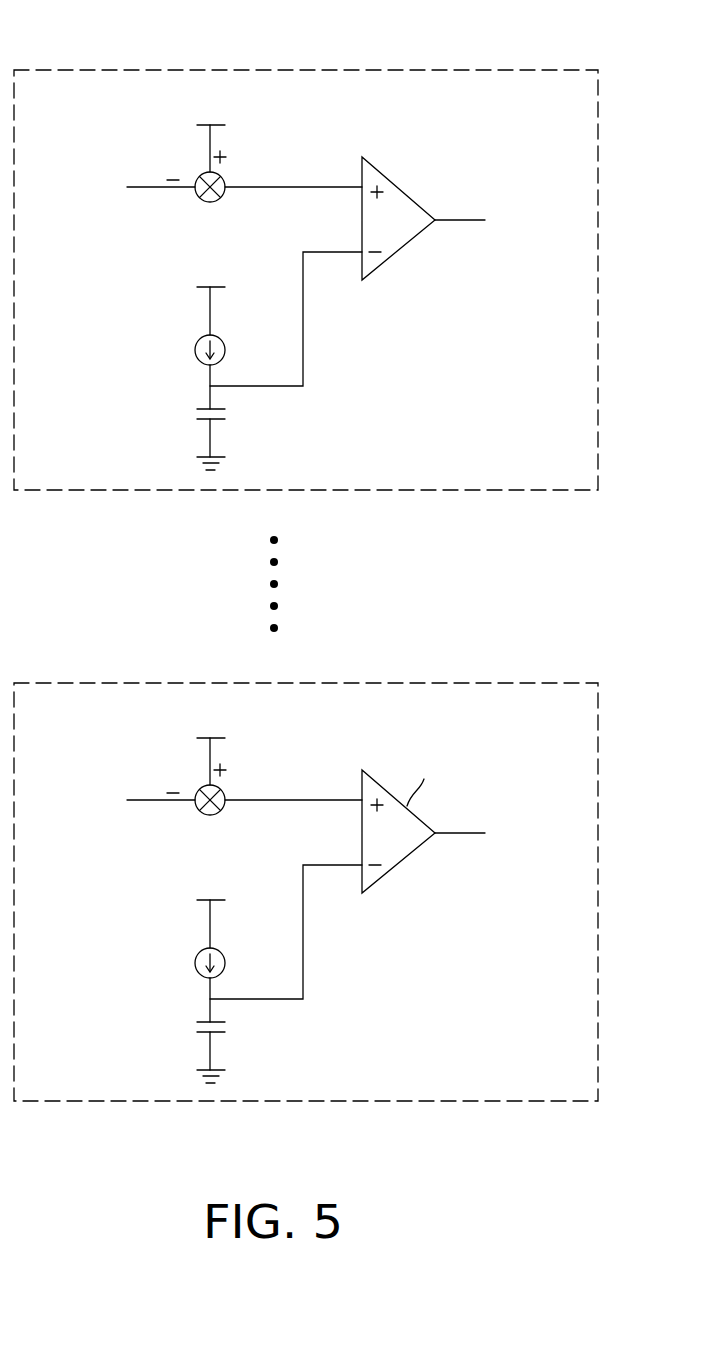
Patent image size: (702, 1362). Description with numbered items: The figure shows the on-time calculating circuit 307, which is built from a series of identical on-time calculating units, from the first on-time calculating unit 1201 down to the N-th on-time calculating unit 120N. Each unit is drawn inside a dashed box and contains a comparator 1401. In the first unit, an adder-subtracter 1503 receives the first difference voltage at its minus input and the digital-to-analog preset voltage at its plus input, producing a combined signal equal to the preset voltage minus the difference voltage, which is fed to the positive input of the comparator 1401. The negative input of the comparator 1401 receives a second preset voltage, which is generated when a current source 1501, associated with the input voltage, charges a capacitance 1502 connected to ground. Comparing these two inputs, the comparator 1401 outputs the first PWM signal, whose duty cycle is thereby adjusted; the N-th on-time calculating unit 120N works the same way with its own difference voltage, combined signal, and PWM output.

The on-time calculating circuit 307 is at (634, 1148).
The on-time calculating unit 1201 is at (349, 70).
The on-time calculating unit 120N is at (306, 858).
The comparator 1401 is at (407, 193).
The current source 1501 is at (211, 348).
The capacitance 1502 is at (241, 430).
The adder-subtracter 1503 is at (214, 201).